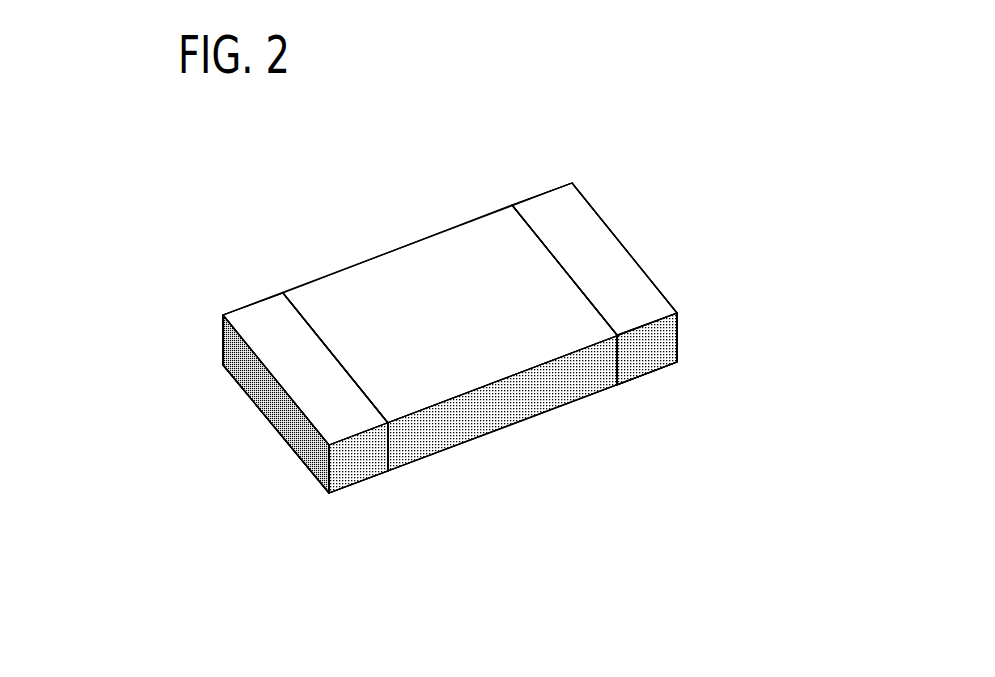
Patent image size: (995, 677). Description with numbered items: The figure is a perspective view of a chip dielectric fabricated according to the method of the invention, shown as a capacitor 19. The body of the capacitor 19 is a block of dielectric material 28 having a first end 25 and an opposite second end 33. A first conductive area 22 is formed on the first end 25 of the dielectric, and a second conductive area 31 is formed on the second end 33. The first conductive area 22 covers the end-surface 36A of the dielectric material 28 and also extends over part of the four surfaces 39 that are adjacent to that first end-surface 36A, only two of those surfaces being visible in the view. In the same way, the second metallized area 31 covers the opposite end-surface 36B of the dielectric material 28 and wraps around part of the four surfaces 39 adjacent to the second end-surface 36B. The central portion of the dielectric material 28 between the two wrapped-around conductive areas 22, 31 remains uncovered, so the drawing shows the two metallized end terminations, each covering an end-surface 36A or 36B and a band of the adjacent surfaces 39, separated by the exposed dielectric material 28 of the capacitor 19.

The capacitor 19 is at (499, 124).
The first conductive area 22 is at (196, 343).
The first end 25 is at (236, 482).
The dielectric material 28 is at (378, 326).
The second conductive area 31 is at (602, 191).
The second end 33 is at (720, 337).
The first end-surface 36A is at (245, 369).
The second end-surface 36B is at (676, 297).
The surfaces adjacent to the end-surfaces 39 is at (265, 330).